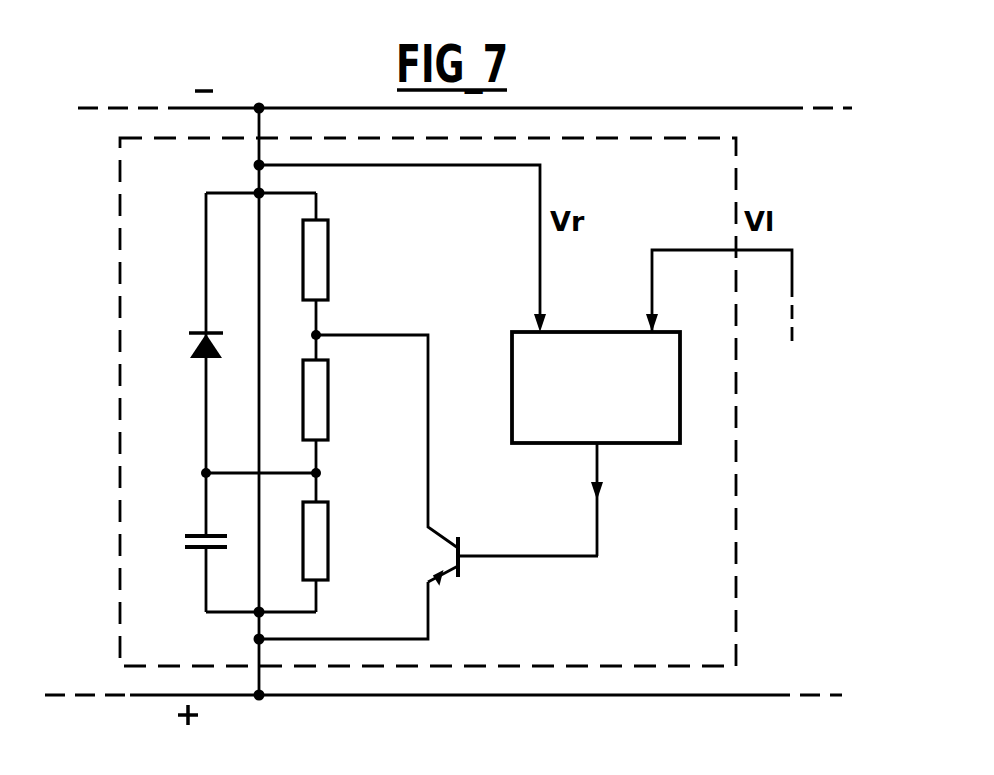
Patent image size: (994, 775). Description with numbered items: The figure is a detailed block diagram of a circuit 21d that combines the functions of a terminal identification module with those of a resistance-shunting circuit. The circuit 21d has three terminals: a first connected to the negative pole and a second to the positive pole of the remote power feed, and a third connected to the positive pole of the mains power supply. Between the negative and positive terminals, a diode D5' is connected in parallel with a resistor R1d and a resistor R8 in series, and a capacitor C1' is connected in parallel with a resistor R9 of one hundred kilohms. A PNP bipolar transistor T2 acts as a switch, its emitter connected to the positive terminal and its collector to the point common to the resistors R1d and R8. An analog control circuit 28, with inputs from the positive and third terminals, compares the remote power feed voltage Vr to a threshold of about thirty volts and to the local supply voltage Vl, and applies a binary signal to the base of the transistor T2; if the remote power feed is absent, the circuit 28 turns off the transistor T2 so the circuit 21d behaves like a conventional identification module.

The circuit 21d is at (736, 178).
The analog control circuit 28 is at (597, 331).
The resistor R1d is at (329, 254).
The resistor R8 is at (329, 398).
The resistor R9 is at (329, 540).
The diode D5' is at (185, 319).
The capacitor C1' is at (194, 573).
The PNP bipolar transistor T2 is at (468, 545).